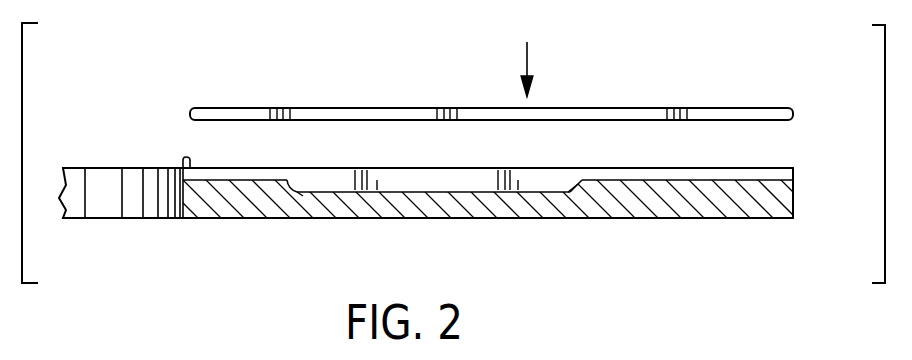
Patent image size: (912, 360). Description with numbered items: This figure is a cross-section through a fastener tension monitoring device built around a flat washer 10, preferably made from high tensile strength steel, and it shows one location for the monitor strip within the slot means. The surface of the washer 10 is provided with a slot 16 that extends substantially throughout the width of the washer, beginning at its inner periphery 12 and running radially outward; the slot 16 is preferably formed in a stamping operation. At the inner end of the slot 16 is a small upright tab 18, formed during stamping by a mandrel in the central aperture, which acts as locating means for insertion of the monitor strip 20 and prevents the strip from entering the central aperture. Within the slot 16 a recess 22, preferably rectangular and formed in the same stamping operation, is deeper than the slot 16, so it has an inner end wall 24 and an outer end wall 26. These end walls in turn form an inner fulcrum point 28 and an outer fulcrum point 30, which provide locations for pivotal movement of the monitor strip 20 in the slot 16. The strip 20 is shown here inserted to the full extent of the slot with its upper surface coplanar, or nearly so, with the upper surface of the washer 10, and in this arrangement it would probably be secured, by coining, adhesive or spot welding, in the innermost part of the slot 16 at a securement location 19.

The flat washer 10 is at (703, 239).
The inner periphery 12 is at (108, 222).
The slot 16 is at (698, 175).
The upright tab 18 is at (182, 160).
The securement location 19 is at (247, 172).
The monitor strip 20 is at (625, 108).
The recess 22 is at (446, 178).
The inner end wall 24 is at (303, 195).
The outer end wall 26 is at (568, 190).
The inner fulcrum point 28 is at (288, 189).
The outer fulcrum point 30 is at (577, 190).